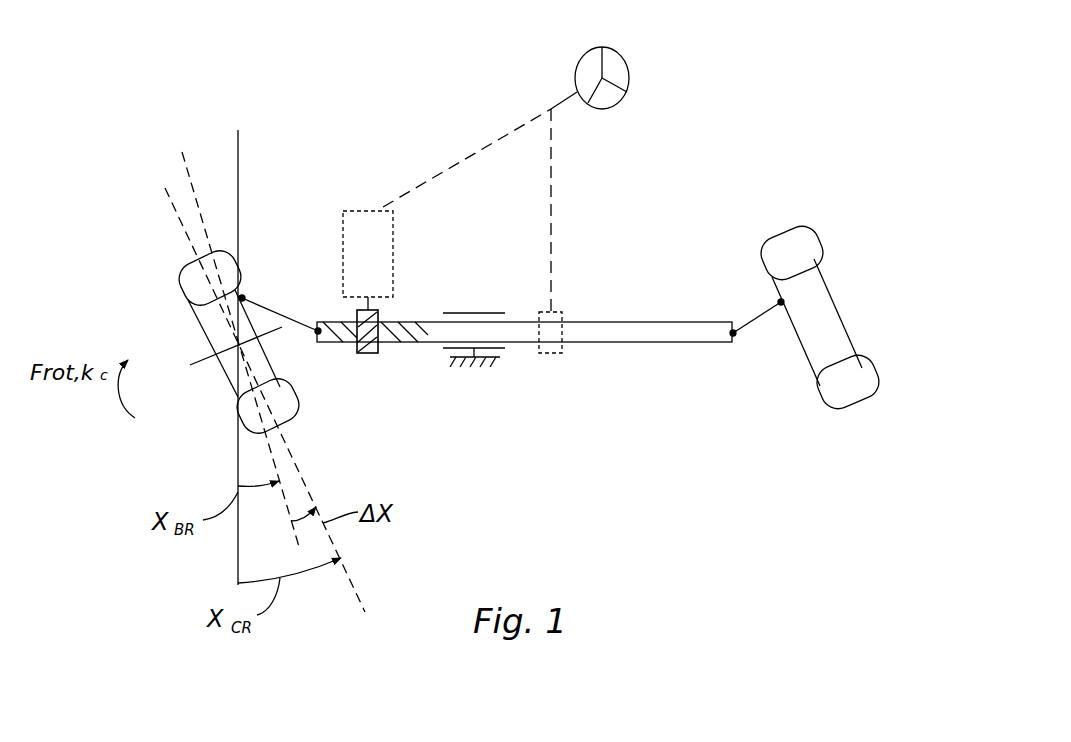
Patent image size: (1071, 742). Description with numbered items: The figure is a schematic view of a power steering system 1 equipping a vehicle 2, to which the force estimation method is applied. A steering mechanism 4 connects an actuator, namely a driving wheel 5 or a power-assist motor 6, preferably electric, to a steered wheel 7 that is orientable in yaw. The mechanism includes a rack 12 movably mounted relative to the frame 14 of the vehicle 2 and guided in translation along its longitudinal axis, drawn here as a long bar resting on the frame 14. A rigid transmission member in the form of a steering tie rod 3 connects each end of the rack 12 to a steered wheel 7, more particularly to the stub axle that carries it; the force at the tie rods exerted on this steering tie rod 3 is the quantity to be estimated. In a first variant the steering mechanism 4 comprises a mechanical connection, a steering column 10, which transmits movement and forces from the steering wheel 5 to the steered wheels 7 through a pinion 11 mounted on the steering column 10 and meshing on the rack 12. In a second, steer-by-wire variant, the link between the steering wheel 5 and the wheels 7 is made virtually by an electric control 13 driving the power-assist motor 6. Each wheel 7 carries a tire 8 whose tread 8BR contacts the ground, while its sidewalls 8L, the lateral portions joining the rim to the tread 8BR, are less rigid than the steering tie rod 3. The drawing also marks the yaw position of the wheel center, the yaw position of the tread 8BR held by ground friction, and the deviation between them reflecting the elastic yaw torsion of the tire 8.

The power steering system 1 is at (752, 112).
The vehicle 2 is at (757, 47).
The steering tie rod 3 is at (248, 298).
The steering mechanism 4 is at (398, 312).
The driving wheel 5 is at (625, 57).
The power-assist motor 6 is at (358, 227).
The steered wheel 7 is at (202, 330).
The tire 8 is at (182, 265).
The tread 8BR is at (248, 432).
The sidewalls 8L is at (880, 373).
The steering column 10 is at (556, 176).
The pinion 11 is at (563, 331).
The rack 12 is at (630, 328).
The electric control 13 is at (460, 157).
The frame 14 is at (497, 366).